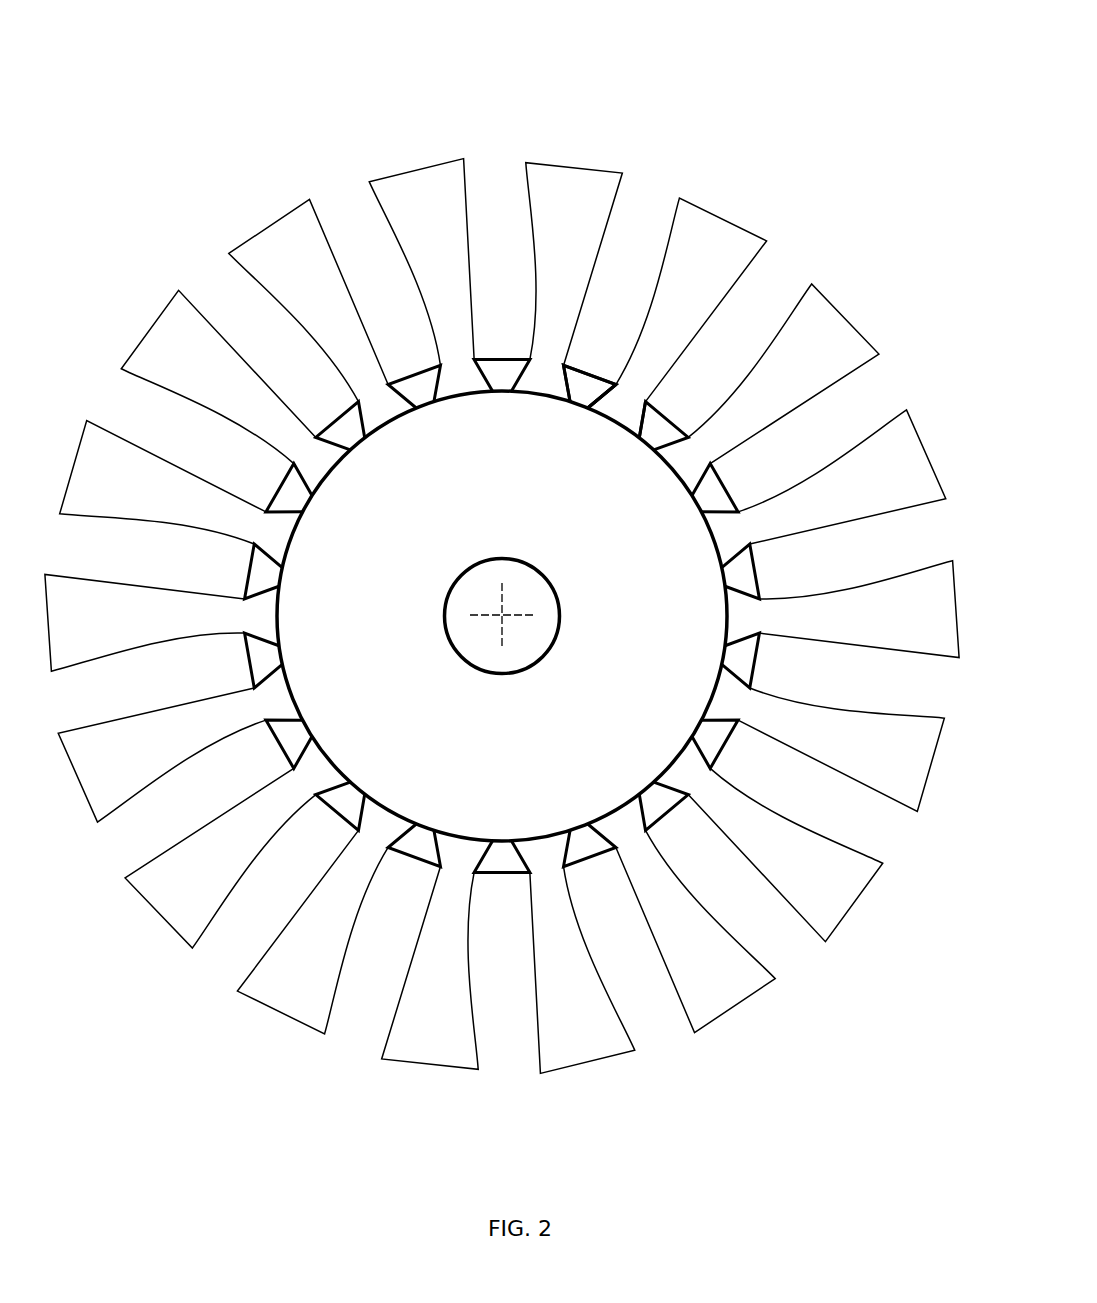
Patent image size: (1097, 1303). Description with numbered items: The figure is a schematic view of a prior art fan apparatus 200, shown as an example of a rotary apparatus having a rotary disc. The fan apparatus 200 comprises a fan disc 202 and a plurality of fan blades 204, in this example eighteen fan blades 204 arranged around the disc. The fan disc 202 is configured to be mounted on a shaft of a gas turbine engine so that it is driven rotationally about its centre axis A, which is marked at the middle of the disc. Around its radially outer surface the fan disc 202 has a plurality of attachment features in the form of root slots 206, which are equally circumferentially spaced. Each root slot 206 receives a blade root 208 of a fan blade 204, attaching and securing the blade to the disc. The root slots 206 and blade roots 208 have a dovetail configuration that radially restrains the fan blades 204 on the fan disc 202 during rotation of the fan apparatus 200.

The fan apparatus 200 is at (247, 198).
The fan disc 202 is at (526, 786).
The fan blade 204 is at (185, 353).
The root slot 206 is at (600, 387).
The blade root 208 is at (623, 412).